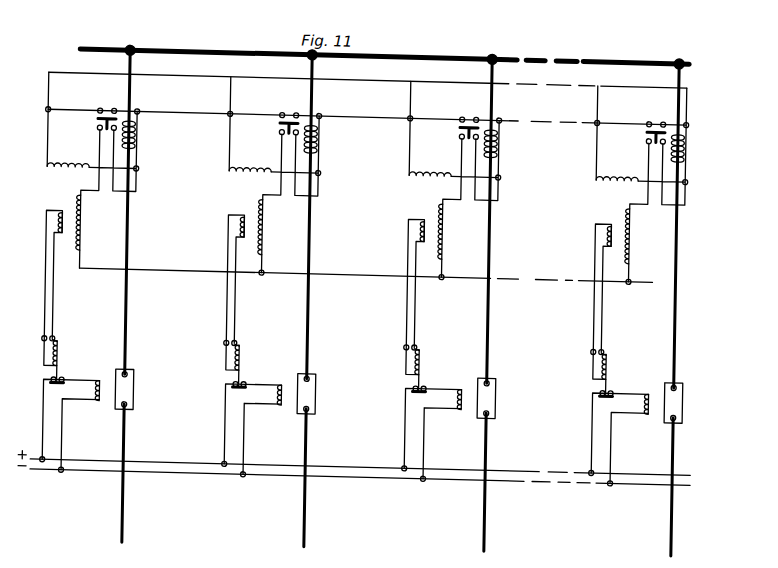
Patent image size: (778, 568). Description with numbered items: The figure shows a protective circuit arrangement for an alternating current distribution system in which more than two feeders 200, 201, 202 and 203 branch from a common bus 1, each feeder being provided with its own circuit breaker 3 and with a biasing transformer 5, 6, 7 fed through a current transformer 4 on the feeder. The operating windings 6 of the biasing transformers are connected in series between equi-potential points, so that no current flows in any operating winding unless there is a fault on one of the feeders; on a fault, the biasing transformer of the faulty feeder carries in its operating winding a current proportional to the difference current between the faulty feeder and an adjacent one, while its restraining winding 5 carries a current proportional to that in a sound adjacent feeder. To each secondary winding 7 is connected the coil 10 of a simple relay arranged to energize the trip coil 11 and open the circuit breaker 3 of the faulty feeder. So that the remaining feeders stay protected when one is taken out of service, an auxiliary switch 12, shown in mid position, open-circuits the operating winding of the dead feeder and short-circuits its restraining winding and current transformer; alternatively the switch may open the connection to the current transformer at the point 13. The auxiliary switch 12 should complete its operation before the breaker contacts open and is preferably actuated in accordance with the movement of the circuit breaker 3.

The main bus bar 1 is at (197, 44).
The circuit breaker 3 is at (141, 388).
The series current coil 4 is at (141, 128).
The biasing transformer 5 is at (68, 164).
The operating winding 6 is at (92, 221).
The secondary winding 7 is at (65, 209).
The relay coil 10 is at (67, 356).
The trip coil 11 is at (104, 400).
The auxiliary switch 12 is at (97, 118).
The point 13 is at (327, 156).
The feeder 200 is at (133, 326).
The feeder 201 is at (315, 322).
The feeder 202 is at (496, 306).
The feeder 203 is at (683, 333).